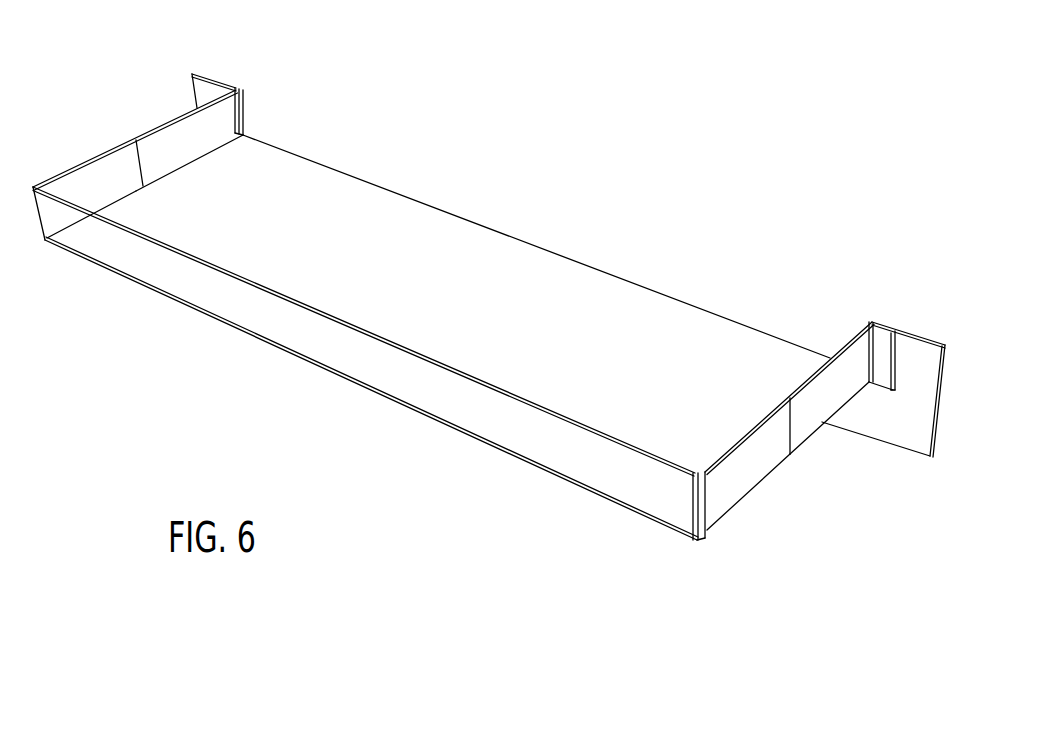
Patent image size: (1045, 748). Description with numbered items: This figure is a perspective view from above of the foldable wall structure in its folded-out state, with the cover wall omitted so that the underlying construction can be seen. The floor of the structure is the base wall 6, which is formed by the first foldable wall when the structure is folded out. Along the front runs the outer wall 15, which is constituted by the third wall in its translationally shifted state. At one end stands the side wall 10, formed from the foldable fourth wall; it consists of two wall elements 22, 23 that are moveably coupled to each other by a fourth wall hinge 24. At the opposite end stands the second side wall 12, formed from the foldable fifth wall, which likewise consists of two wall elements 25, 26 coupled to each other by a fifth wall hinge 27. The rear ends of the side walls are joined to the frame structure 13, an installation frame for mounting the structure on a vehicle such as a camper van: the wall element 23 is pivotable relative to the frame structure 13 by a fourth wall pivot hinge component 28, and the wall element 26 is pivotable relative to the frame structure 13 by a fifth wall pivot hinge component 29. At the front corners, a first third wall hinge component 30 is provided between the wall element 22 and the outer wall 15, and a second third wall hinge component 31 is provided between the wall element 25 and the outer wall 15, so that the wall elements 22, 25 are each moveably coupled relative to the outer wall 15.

The base wall 6 is at (592, 269).
The side wall 10 is at (167, 130).
The second side wall 12 is at (823, 415).
The frame structure 13 is at (200, 73).
The outer wall 15 is at (440, 408).
The wall element 22 is at (82, 173).
The wall element 23 is at (217, 135).
The fourth wall hinge 24 is at (133, 150).
The wall element 25 is at (750, 480).
The wall element 26 is at (837, 350).
The fifth wall hinge 27 is at (780, 457).
The fourth wall pivot hinge component 28 is at (250, 110).
The fifth wall pivot hinge component 29 is at (877, 340).
The first third wall hinge component 30 is at (40, 244).
The second third wall hinge component 31 is at (700, 540).